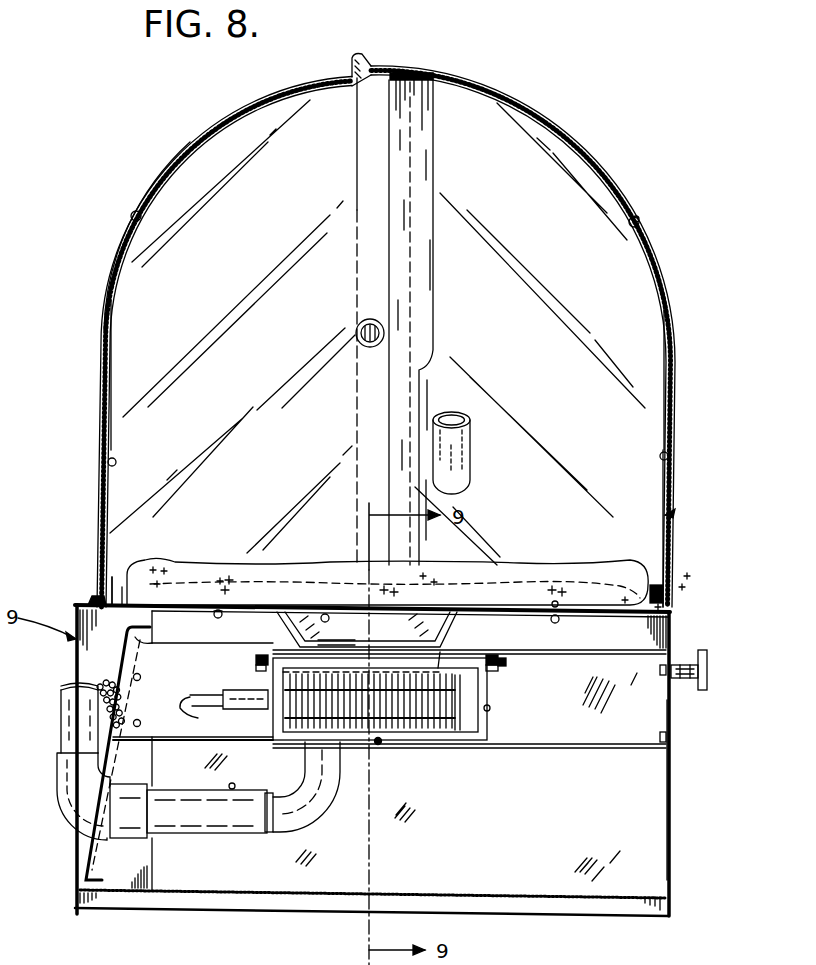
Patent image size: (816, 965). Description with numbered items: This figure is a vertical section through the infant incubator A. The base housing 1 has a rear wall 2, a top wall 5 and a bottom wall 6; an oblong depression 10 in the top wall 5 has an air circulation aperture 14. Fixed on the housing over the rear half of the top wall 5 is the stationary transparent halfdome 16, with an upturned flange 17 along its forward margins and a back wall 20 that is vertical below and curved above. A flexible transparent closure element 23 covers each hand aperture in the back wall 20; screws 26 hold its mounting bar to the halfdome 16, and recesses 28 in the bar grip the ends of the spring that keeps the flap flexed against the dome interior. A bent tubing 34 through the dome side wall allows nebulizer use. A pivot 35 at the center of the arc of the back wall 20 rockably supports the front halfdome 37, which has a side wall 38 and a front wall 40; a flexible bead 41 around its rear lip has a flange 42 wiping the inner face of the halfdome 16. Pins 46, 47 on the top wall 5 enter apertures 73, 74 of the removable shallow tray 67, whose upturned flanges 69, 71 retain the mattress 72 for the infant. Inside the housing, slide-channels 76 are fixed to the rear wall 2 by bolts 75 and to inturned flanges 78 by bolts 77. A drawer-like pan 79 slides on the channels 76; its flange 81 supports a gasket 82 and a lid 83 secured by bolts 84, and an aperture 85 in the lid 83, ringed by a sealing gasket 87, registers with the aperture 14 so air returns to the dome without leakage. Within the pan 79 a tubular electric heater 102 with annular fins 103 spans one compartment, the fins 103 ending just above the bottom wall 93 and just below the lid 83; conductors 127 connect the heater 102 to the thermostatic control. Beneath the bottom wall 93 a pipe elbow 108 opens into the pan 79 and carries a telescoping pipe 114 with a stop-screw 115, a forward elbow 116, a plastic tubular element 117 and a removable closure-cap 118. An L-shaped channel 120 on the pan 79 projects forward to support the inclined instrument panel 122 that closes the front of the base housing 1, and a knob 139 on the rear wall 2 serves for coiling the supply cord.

The base housing 1 is at (670, 770).
The rear wall 2 is at (670, 840).
The top wall 5 is at (122, 620).
The bottom wall 6 is at (486, 888).
The depression 10 is at (326, 613).
The air circulation aperture 14 is at (392, 622).
The stationary halfdome 16 is at (596, 153).
The upturned flange 17 is at (363, 55).
The back wall 20 is at (670, 556).
The closure element 23 is at (664, 322).
The screws 26 is at (640, 222).
The recesses 28 is at (204, 964).
The tubing 34 is at (470, 462).
The pivot 35 is at (360, 328).
The front halfdome 37 is at (174, 153).
The side wall 38 is at (112, 322).
The front wall 40 is at (104, 484).
The flexible bead 41 is at (396, 174).
The flexible flange 42 is at (436, 142).
The pin 46 is at (224, 600).
The pin 47 is at (556, 602).
The tray 67 is at (388, 592).
The marginal flange 69 is at (663, 588).
The marginal flange 71 is at (112, 577).
The mattress 72 is at (490, 575).
The aperture 73 is at (218, 614).
The aperture 74 is at (560, 620).
The bolts 75 is at (658, 670).
The slide-channels 76 is at (567, 748).
The bolts 77 is at (142, 681).
The inturned vertical flanges 78 is at (94, 656).
The pan 79 is at (490, 708).
The flange 81 is at (498, 670).
The gasket 82 is at (500, 662).
The lid 83 is at (254, 660).
The bolts 84 is at (264, 654).
The aperture 85 is at (358, 643).
The sealing gasket 87 is at (440, 670).
The bottom wall 93 is at (378, 744).
The electric heater 102 is at (458, 716).
The fins 103 is at (443, 732).
The pipe elbow 108 is at (333, 796).
The pipe 114 is at (206, 836).
The stop-screw 115 is at (234, 784).
The elbow 116 is at (60, 776).
The plastic tubular element 117 is at (64, 714).
The closure-cap 118 is at (66, 688).
The L-shaped channel 120 is at (188, 670).
The instrument panel 122 is at (84, 846).
The conductors 127 is at (206, 705).
The knob 139 is at (703, 650).
The infant incubator A is at (670, 512).